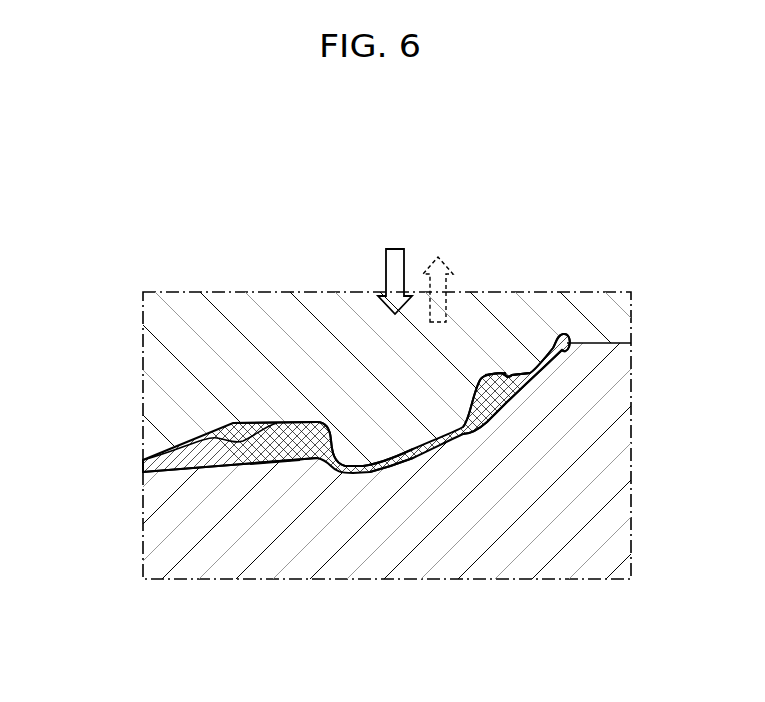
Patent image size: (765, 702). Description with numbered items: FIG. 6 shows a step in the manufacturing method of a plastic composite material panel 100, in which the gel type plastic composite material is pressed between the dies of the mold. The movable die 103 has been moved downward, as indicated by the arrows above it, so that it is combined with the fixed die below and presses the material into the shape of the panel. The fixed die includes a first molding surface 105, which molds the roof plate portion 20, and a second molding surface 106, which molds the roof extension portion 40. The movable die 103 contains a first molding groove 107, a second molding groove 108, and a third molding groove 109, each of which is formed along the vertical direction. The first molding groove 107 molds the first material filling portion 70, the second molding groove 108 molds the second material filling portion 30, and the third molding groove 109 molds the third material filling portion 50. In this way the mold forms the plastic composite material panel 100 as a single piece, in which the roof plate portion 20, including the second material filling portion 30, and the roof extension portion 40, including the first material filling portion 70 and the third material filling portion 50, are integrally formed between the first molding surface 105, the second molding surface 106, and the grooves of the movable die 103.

The plastic composite material panel 100 is at (143, 465).
The roof plate portion 20 is at (216, 470).
The second material filling portion 30 is at (283, 433).
The roof extension portion 40 is at (444, 457).
The third material filling portion 50 is at (500, 397).
The first material filling portion 70 is at (570, 350).
The movable die 103 is at (158, 361).
The first molding surface 105 is at (277, 468).
The second molding surface 106 is at (393, 466).
The first molding groove 107 is at (562, 356).
The second molding groove 108 is at (230, 443).
The third molding groove 109 is at (510, 376).